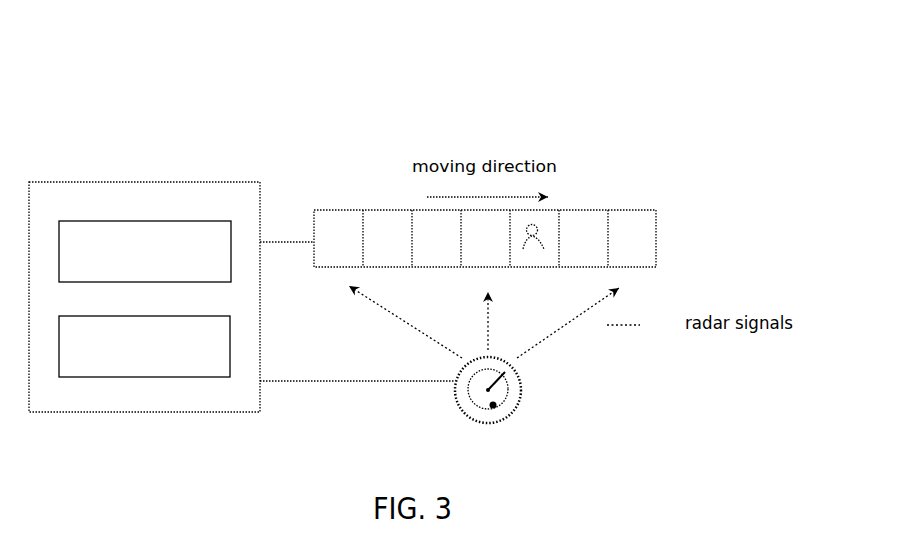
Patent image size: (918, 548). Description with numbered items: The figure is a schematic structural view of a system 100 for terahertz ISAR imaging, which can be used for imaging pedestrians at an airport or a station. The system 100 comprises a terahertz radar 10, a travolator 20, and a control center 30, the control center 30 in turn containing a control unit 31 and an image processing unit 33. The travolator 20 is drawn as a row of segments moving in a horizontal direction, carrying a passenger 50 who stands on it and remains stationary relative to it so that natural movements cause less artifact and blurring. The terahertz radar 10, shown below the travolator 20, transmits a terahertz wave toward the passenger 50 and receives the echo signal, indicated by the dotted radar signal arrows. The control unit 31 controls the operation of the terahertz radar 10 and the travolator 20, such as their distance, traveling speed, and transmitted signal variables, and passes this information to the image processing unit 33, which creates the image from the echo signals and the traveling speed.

The system for terahertz ISAR imaging 100 is at (611, 62).
The control center 30 is at (153, 182).
The control unit 31 is at (145, 251).
The image processing unit 33 is at (144, 346).
The travolator 20 is at (641, 210).
The object (person) 50 is at (549, 228).
The terahertz radar 10 is at (520, 402).